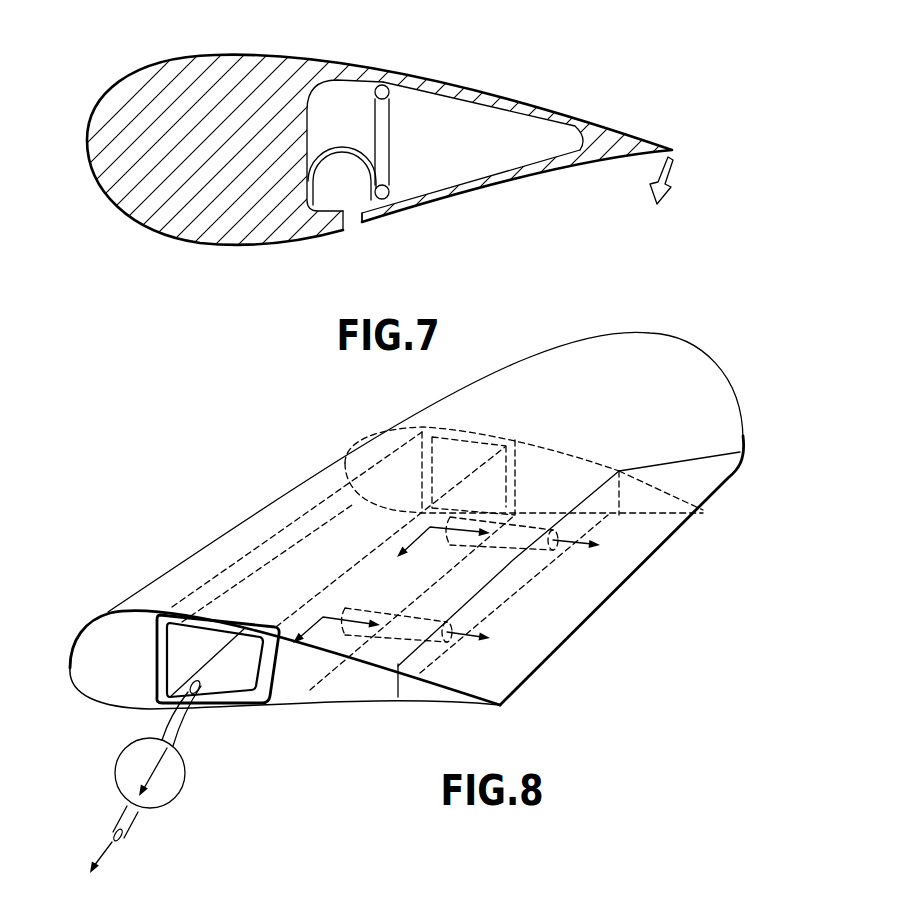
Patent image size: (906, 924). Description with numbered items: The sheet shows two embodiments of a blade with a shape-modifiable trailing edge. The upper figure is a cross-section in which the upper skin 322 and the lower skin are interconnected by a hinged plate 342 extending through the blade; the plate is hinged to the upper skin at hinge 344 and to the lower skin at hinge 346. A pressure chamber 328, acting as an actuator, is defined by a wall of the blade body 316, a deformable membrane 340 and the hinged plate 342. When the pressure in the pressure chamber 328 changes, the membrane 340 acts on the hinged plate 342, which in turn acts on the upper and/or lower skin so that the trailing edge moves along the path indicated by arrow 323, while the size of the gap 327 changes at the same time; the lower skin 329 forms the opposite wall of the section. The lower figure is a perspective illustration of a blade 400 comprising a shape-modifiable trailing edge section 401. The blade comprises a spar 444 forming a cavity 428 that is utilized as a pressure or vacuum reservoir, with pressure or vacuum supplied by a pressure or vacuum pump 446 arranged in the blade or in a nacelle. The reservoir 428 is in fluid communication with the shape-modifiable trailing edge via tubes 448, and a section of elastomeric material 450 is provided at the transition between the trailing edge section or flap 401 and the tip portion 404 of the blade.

In FIG. 7, the blade body 316 is at (190, 76).
In FIG. 7, the upper skin 322 is at (520, 97).
In FIG. 7, the suction side skin wall 329 is at (513, 174).
In FIG. 7, the pressure chamber 328 is at (343, 104).
In FIG. 7, the deformable membrane 340 is at (330, 172).
In FIG. 7, the gap 327 is at (343, 233).
In FIG. 7, the hinged plate 342 is at (398, 112).
In FIG. 7, the hinge 344 is at (383, 84).
In FIG. 7, the hinge 346 is at (396, 205).
In FIG. 7, the arrow 323 is at (669, 178).
In FIG. 8, the blade 400 is at (246, 456).
In FIG. 8, the tip portion 404 is at (658, 353).
In FIG. 8, the shape-modifiable trailing edge section 401 is at (600, 587).
In FIG. 8, the section of elastomeric material 450 is at (693, 485).
In FIG. 8, the cavity 428 is at (262, 580).
In FIG. 8, the tubes 448 is at (523, 530).
In FIG. 8, the spar 444 is at (157, 682).
In FIG. 8, the pressure or vacuum pump 446 is at (172, 777).